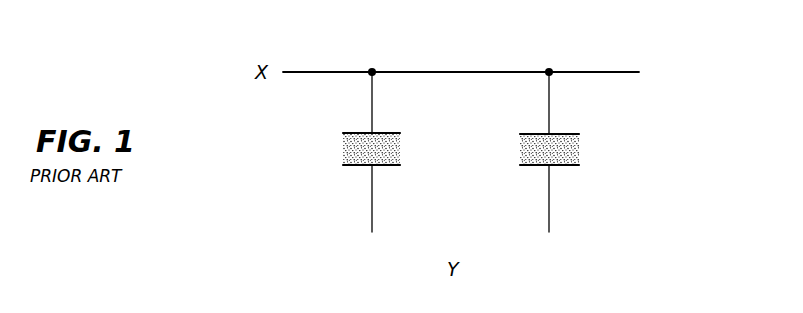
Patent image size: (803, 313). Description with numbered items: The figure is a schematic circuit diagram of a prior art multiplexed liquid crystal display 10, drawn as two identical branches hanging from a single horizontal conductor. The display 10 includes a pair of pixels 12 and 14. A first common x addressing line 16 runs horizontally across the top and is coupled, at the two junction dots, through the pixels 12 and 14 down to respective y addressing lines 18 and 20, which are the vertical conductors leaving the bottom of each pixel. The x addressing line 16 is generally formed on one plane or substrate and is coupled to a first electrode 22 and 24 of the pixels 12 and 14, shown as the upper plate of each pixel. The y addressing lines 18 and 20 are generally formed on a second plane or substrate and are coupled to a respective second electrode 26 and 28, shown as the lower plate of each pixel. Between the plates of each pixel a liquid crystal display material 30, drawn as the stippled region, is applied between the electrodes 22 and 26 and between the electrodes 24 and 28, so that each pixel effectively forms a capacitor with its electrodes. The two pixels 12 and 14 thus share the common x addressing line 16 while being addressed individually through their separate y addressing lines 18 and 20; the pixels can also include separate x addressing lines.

The liquid crystal display 10 is at (676, 82).
The pixel 12 is at (358, 180).
The pixel 14 is at (538, 180).
The first common x addressing line 16 is at (451, 72).
The y addressing line 18 is at (372, 222).
The y addressing line 20 is at (549, 218).
The first electrode 22 is at (385, 133).
The first electrode 24 is at (565, 134).
The second electrode 26 is at (392, 166).
The second electrode 28 is at (565, 167).
The liquid crystal display material 30 is at (390, 150).